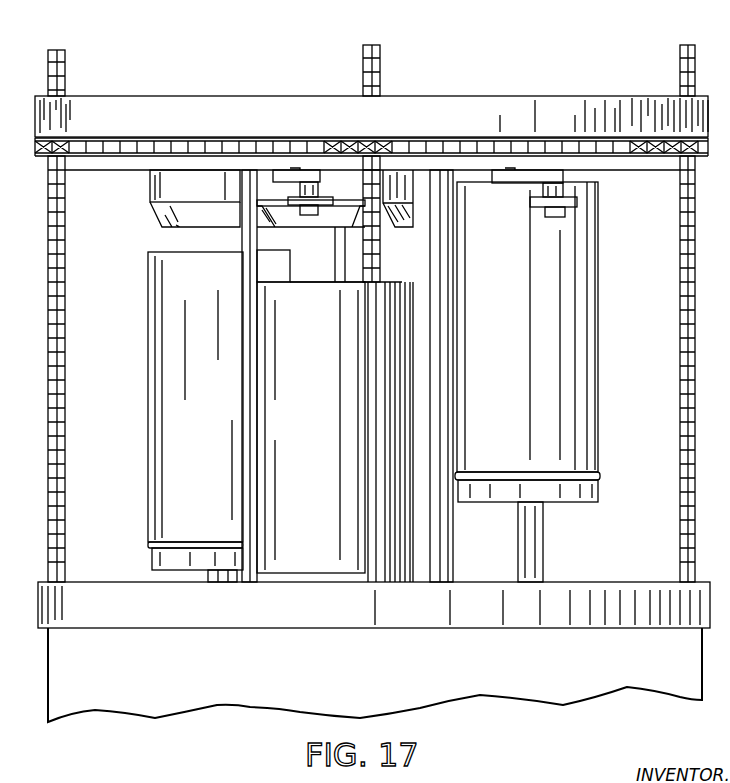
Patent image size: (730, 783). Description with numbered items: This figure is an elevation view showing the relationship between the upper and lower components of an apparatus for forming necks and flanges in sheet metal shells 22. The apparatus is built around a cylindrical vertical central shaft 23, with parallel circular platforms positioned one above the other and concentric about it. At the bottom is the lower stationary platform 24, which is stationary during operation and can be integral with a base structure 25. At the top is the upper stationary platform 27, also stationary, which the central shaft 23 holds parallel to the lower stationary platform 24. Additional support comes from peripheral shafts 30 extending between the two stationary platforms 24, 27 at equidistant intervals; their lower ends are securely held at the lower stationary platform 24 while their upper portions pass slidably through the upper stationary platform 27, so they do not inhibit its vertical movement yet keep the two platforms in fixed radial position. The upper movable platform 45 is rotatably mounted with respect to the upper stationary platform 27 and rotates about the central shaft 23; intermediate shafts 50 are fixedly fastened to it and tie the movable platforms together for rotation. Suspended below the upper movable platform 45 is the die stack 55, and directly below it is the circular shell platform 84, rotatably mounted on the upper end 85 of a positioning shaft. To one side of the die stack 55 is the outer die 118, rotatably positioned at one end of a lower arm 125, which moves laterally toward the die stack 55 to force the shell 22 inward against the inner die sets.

The peripheral shafts 30 is at (65, 68).
The upper stationary platform 27 is at (553, 96).
The upper movable platform 45 is at (618, 170).
The die stack 55 is at (150, 205).
The lower arm 125 is at (312, 180).
The outer die 118 is at (292, 216).
The central shaft 23 is at (338, 260).
The intermediate shafts 50 is at (242, 278).
The sheet metal shell 22 is at (320, 378).
The shell platform 84 is at (150, 555).
The upper end of positioning shaft 85 is at (206, 574).
The lower stationary platform 24 is at (38, 618).
The base structure 25 is at (48, 672).